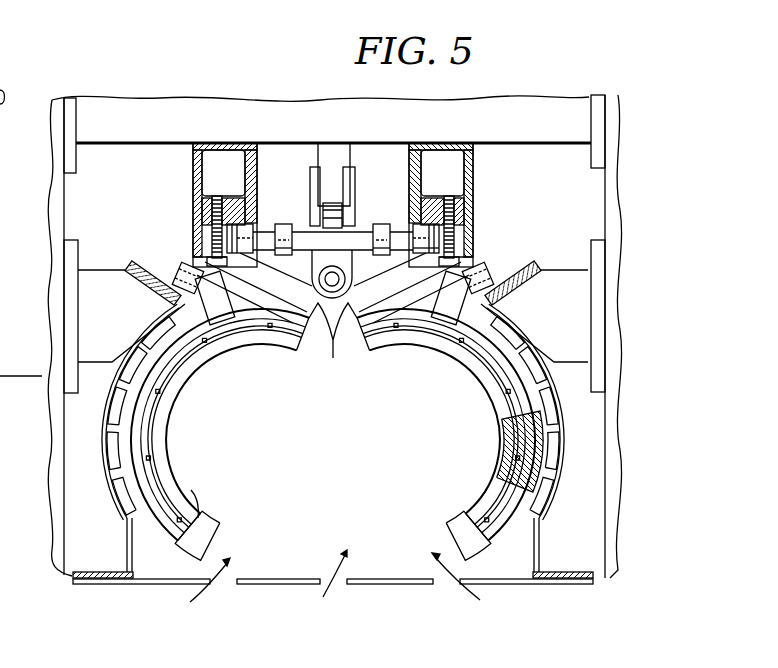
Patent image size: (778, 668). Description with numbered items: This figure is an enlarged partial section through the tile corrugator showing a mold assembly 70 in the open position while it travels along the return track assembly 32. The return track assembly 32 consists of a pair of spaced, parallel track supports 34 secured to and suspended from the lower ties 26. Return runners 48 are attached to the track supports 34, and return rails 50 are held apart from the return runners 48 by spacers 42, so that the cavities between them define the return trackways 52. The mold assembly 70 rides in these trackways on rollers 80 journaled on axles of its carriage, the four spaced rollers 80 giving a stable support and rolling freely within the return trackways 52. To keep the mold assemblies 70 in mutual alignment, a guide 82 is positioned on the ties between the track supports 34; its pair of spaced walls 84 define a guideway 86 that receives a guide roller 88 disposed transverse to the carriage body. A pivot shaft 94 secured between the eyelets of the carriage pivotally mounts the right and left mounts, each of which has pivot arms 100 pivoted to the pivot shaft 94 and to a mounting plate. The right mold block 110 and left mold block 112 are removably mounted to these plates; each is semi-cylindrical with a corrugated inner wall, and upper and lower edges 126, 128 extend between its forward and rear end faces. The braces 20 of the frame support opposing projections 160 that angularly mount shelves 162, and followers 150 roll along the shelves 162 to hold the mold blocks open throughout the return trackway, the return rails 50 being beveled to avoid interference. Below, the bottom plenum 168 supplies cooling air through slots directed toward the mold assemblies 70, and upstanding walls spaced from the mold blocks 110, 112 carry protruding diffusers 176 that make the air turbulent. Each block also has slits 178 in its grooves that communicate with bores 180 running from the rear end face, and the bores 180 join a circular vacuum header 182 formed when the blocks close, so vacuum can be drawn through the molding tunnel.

The braces 20 is at (73, 210).
The lower ties 26 is at (168, 135).
The return track assembly 32 is at (490, 239).
The track supports 34 is at (192, 168).
The spacers 42 is at (192, 243).
The return runners 48 is at (192, 215).
The return rails 50 is at (258, 266).
The return trackways 52 is at (250, 212).
The mold assemblies 70 is at (365, 255).
The rollers 80 is at (416, 233).
The guide 82 is at (338, 158).
The spaced walls 84 is at (357, 175).
The guideway 86 is at (312, 205).
The guide roller 88 is at (340, 230).
The pivot shaft 94 is at (347, 270).
The pivot arms 100 is at (335, 343).
The right mold block 110 is at (471, 372).
The left mold block 112 is at (240, 356).
The upper edge 126 is at (220, 527).
The lower edge 128 is at (302, 357).
The followers 150 is at (170, 273).
The projections 160 is at (125, 334).
The shelves 162 is at (147, 290).
The bottom plenum 168 is at (384, 624).
The diffusers 176 is at (123, 497).
The slits 178 is at (507, 453).
The bores 180 is at (180, 520).
The vacuum header 182 is at (160, 492).